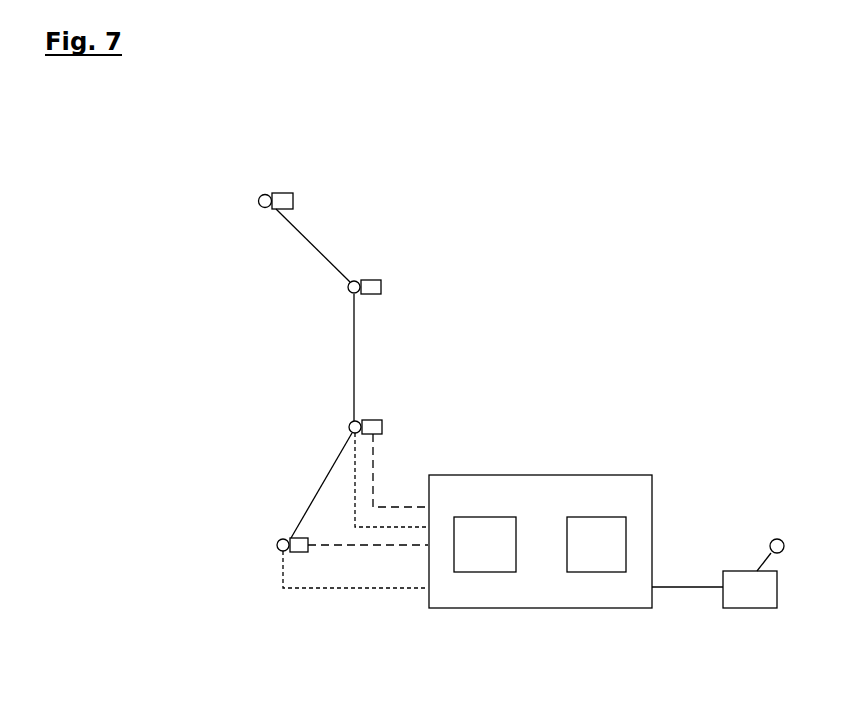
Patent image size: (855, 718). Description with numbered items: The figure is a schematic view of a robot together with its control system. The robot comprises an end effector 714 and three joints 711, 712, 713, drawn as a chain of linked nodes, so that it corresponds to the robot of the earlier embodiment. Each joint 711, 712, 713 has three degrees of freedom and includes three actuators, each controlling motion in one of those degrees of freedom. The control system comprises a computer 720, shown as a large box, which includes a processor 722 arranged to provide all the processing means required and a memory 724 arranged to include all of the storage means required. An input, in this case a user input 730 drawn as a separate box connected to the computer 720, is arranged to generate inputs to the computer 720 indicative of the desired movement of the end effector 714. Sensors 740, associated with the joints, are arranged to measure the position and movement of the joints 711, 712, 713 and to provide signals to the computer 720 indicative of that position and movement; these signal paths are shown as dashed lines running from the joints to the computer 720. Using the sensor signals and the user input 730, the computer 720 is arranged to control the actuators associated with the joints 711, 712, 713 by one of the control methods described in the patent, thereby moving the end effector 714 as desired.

The joint 711 is at (277, 544).
The joint 712 is at (349, 425).
The joint 713 is at (348, 286).
The end effector 714 is at (258, 201).
The sensors 740 is at (293, 193).
The computer 720 is at (445, 608).
The processor 722 is at (476, 572).
The memory 724 is at (594, 572).
The user input 730 is at (755, 608).